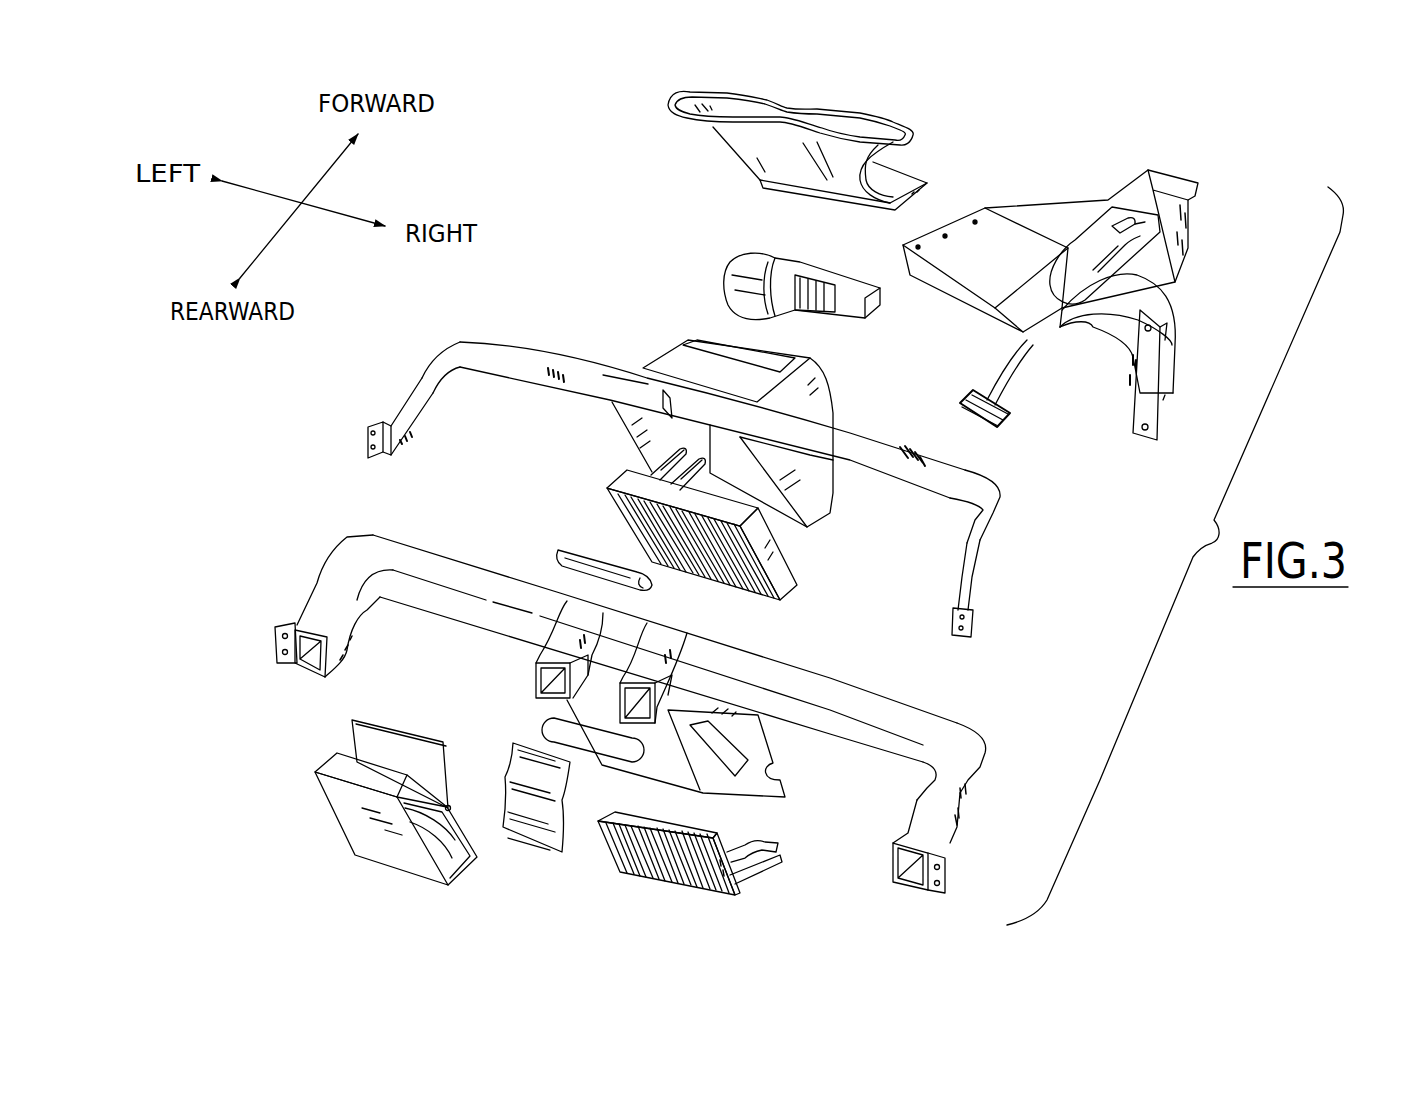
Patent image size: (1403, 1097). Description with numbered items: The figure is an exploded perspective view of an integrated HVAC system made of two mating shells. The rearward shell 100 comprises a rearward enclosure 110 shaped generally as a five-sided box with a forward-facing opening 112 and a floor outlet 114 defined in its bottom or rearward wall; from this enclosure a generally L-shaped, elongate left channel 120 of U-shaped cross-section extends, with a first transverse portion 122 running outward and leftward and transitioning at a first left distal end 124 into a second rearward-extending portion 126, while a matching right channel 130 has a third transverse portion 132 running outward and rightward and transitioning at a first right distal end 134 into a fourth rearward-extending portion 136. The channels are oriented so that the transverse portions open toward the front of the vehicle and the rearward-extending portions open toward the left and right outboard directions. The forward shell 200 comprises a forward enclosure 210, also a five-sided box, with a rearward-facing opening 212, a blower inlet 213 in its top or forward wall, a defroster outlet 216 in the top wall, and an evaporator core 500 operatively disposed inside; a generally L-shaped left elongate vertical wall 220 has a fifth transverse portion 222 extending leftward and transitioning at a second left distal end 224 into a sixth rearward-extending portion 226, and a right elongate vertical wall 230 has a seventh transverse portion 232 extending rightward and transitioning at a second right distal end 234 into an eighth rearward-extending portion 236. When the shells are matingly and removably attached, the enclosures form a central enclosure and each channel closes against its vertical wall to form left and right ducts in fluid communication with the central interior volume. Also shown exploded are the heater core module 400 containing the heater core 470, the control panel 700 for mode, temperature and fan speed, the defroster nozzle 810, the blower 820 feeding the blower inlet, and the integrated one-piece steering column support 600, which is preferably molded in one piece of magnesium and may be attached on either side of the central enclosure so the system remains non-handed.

The rearward shell 100 is at (250, 578).
The rearward enclosure 110 is at (719, 764).
The forward-facing opening in rearward enclosure 112 is at (780, 750).
The floor outlet 114 is at (797, 794).
The left channel 120 is at (660, 690).
The first transverse portion 122 is at (453, 563).
The first left distal end of first transverse portion 124 is at (357, 550).
The second rearward-extending portion 126 is at (323, 593).
The right channel 130 is at (950, 768).
The third transverse portion 132 is at (877, 702).
The first right distal end of third transverse portion 134 is at (967, 748).
The fourth rearward-extending portion 136 is at (920, 830).
The forward shell 200 is at (338, 380).
The forward enclosure 210 is at (774, 422).
The rearward-facing opening in forward enclosure 212 is at (616, 435).
The blower inlet 213 is at (715, 338).
The defroster outlet 216 is at (647, 370).
The left elongate vertical wall 220 is at (664, 383).
The fifth transverse portion 222 is at (540, 357).
The second left distal end of fifth transverse portion 224 is at (460, 342).
The sixth rearward-extending portion 226 is at (392, 412).
The right elongate vertical wall 230 is at (989, 493).
The seventh transverse portion 232 is at (900, 453).
The second right distal end of seventh transverse portion 234 is at (993, 492).
The eighth rearward-extending portion 236 is at (977, 557).
The heater core module 400 is at (330, 822).
The heater core 470 is at (663, 887).
The evaporator core 500 is at (797, 587).
The integrated one-piece steering column support 600 is at (1277, 325).
The control panel 700 is at (543, 727).
The defroster nozzle 810 is at (910, 128).
The blower 820 is at (838, 278).